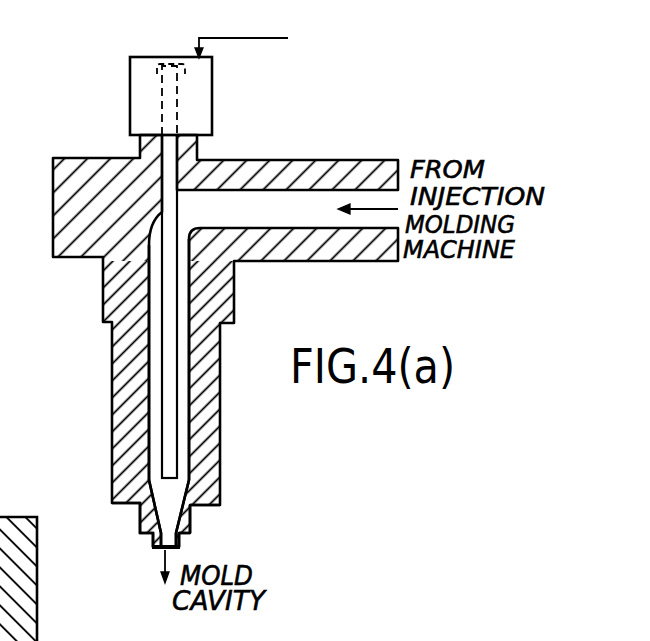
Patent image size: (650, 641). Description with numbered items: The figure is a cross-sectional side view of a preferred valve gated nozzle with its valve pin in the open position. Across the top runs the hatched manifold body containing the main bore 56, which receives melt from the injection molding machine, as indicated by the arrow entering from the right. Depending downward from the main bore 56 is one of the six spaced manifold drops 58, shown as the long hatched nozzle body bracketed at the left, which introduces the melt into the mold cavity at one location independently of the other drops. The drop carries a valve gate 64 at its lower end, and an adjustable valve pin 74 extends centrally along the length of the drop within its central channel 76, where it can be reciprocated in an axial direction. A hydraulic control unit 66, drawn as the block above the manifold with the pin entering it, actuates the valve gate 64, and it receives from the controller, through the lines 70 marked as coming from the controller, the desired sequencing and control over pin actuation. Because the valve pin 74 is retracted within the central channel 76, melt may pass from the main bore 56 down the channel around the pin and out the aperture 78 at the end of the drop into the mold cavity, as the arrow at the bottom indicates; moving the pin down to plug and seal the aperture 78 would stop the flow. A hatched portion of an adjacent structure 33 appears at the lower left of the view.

The mold plate 33 is at (18, 552).
The main bore 56 is at (294, 160).
The manifold drop 58 is at (81, 497).
The valve gate 64 is at (121, 534).
The hydraulic control unit 66 is at (128, 98).
The lines 70 is at (253, 38).
The valve pin 74 is at (178, 220).
The central channel 76 is at (188, 406).
The aperture 78 is at (161, 549).